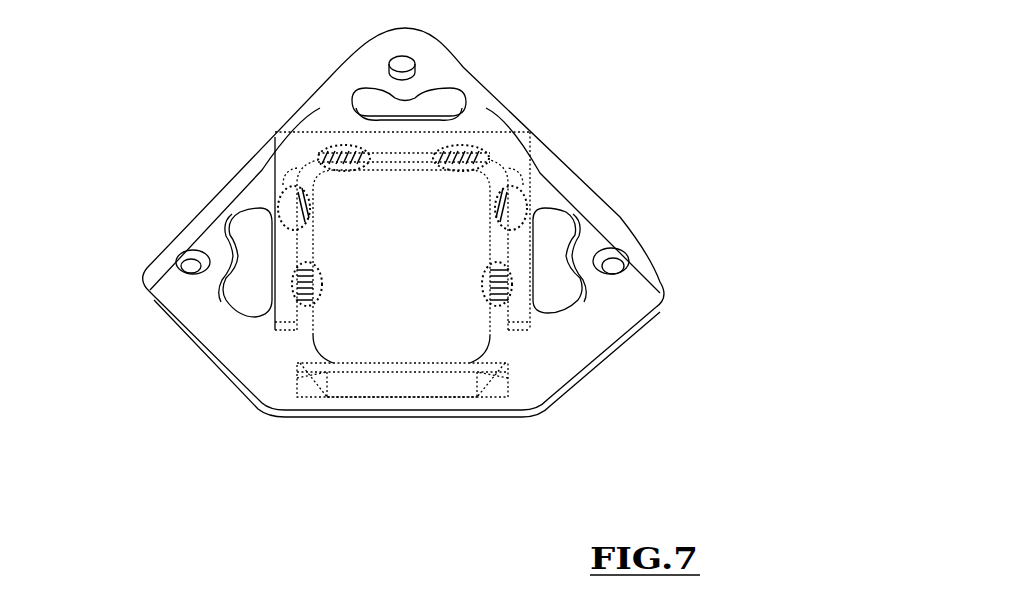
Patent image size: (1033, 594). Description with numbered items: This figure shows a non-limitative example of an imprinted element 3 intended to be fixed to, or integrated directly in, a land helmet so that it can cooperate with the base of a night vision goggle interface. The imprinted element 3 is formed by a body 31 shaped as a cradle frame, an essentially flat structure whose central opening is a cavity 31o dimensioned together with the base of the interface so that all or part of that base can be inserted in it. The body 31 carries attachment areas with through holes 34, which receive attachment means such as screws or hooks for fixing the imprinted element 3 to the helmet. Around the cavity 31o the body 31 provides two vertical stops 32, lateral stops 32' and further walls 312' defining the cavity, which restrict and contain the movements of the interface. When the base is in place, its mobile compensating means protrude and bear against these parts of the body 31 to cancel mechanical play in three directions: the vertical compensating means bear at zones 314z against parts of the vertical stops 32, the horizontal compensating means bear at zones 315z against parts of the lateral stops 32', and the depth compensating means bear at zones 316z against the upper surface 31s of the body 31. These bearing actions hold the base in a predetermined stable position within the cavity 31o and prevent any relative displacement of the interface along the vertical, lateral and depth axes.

The imprinted element 3 is at (249, 99).
The body 31 is at (444, 222).
The cavity 31o is at (341, 344).
The upper surface 31s is at (603, 421).
The vertical stop 32 is at (415, 270).
The lateral stop 32' is at (645, 275).
The side wall 312' is at (165, 273).
The bearing zone of vertical compensating means 314z is at (406, 131).
The second weld zone 315z is at (409, 184).
The bearing zone of depth compensating means 316z is at (455, 362).
The through hole 34 is at (413, 187).